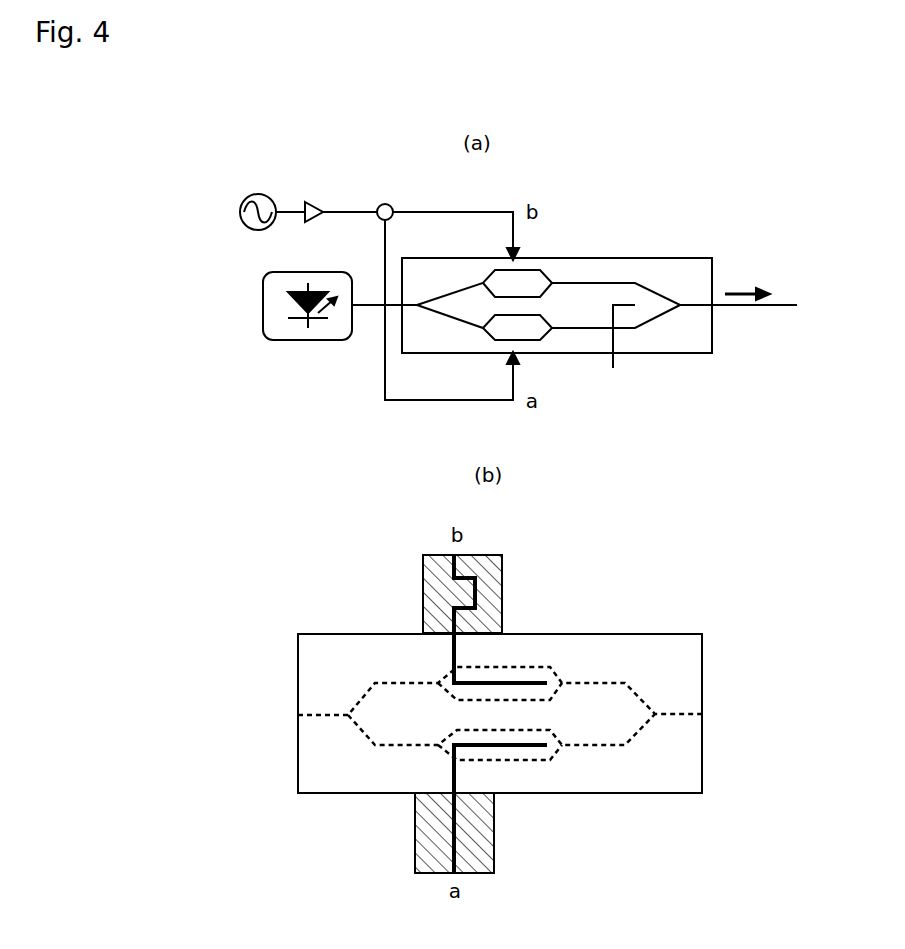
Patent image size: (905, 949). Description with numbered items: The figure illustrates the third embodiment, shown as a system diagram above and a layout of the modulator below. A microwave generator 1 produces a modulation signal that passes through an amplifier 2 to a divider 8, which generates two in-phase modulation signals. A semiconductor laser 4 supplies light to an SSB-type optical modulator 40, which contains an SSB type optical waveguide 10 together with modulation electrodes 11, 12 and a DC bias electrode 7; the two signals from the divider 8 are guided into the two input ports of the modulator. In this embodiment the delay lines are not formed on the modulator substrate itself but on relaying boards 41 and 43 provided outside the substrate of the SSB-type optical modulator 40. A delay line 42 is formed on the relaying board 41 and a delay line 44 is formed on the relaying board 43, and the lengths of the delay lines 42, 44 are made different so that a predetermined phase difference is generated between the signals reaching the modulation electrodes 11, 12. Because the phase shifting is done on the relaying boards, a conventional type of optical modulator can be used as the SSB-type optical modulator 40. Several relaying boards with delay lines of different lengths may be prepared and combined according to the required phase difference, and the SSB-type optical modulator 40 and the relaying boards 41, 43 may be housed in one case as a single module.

The microwave generator 1 is at (258, 192).
The amplifier 2 is at (316, 202).
The divider 8 is at (390, 205).
The semiconductor laser 4 is at (307, 340).
The SSB-type optical modulator 40 is at (643, 257).
The DC bias electrode 7 is at (613, 360).
The relaying board 43 is at (502, 587).
The delay line 44 is at (463, 592).
The modulation electrode 12 is at (503, 683).
The modulation electrode 11 is at (503, 748).
The SSB type optical waveguide 10 is at (372, 752).
The relaying board 41 is at (494, 842).
The delay line 42 is at (435, 843).